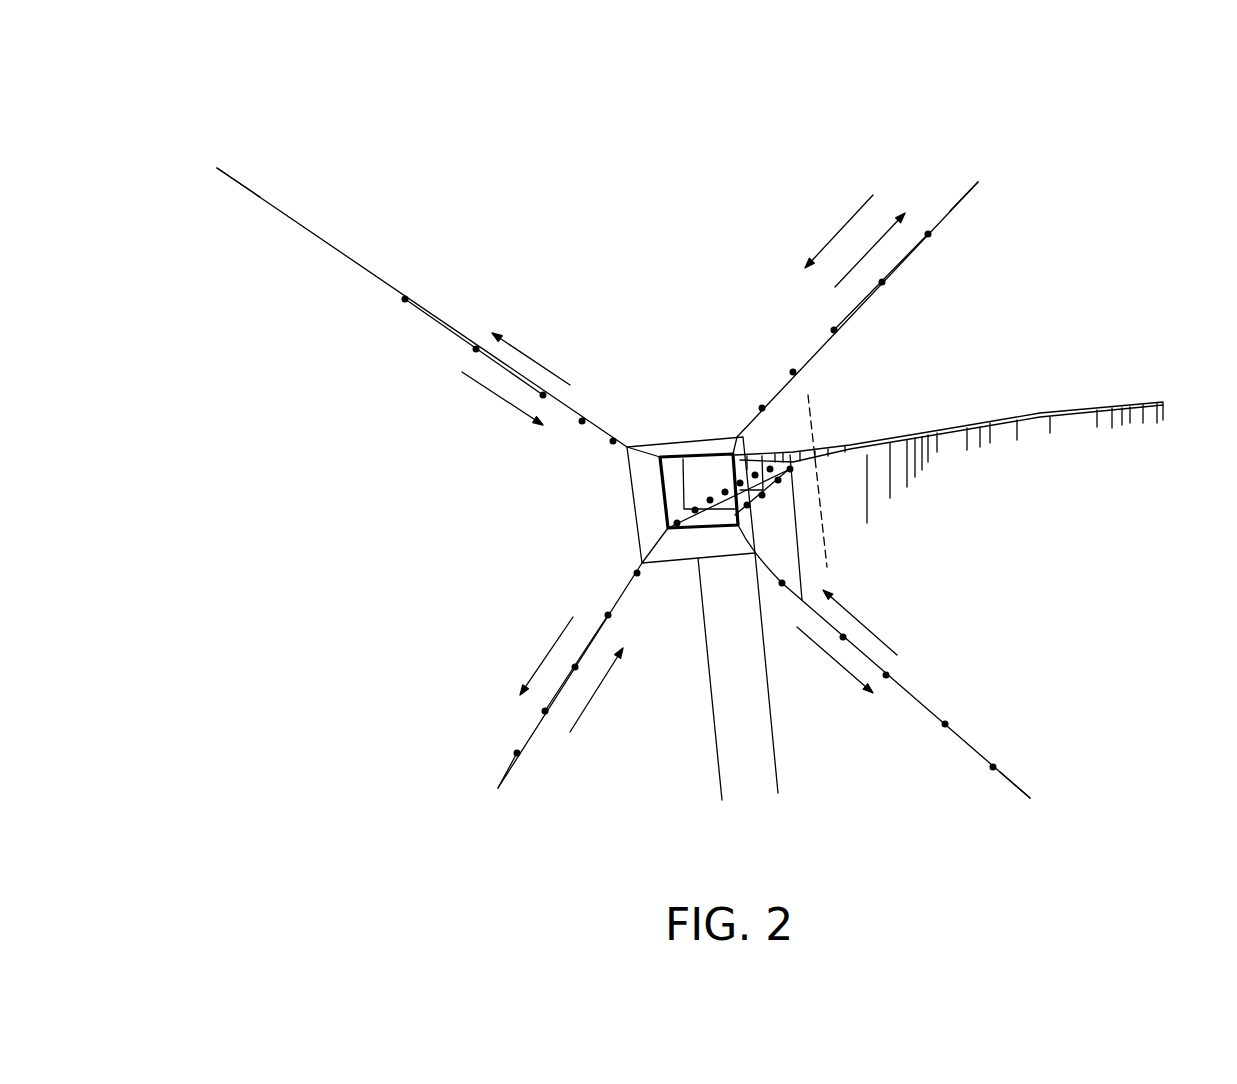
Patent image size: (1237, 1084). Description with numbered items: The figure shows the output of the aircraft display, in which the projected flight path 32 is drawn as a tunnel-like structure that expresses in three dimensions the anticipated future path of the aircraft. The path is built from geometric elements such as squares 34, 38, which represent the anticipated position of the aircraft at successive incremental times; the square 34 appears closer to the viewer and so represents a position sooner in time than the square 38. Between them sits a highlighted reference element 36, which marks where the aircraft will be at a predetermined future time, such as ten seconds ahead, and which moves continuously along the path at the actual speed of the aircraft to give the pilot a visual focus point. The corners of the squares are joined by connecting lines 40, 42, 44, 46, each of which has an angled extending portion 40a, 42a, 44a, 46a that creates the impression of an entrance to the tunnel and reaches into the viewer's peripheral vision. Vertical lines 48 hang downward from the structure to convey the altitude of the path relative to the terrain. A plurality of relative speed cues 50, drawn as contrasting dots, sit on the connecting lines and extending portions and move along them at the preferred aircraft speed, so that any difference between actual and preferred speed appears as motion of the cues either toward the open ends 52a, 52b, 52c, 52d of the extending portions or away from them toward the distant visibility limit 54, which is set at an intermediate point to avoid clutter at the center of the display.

The projected flight path 32 is at (1070, 255).
The square 34 is at (680, 562).
The reference element 36 is at (677, 456).
The square 38 is at (683, 491).
The connecting line 40 is at (438, 284).
The extending portion 40a is at (448, 327).
The connecting line 42 is at (823, 334).
The extending portion 42a is at (862, 300).
The connecting line 44 is at (949, 633).
The extending portion 44a is at (913, 697).
The connecting line 46 is at (554, 687).
The extending portion 46a is at (538, 725).
The vertical lines 48 is at (777, 772).
The relative speed cues 50 is at (476, 351).
The open end 52a is at (235, 180).
The open end 52b is at (948, 210).
The open end 52c is at (1020, 790).
The open end 52d is at (502, 782).
The distant visibility limit 54 is at (812, 418).